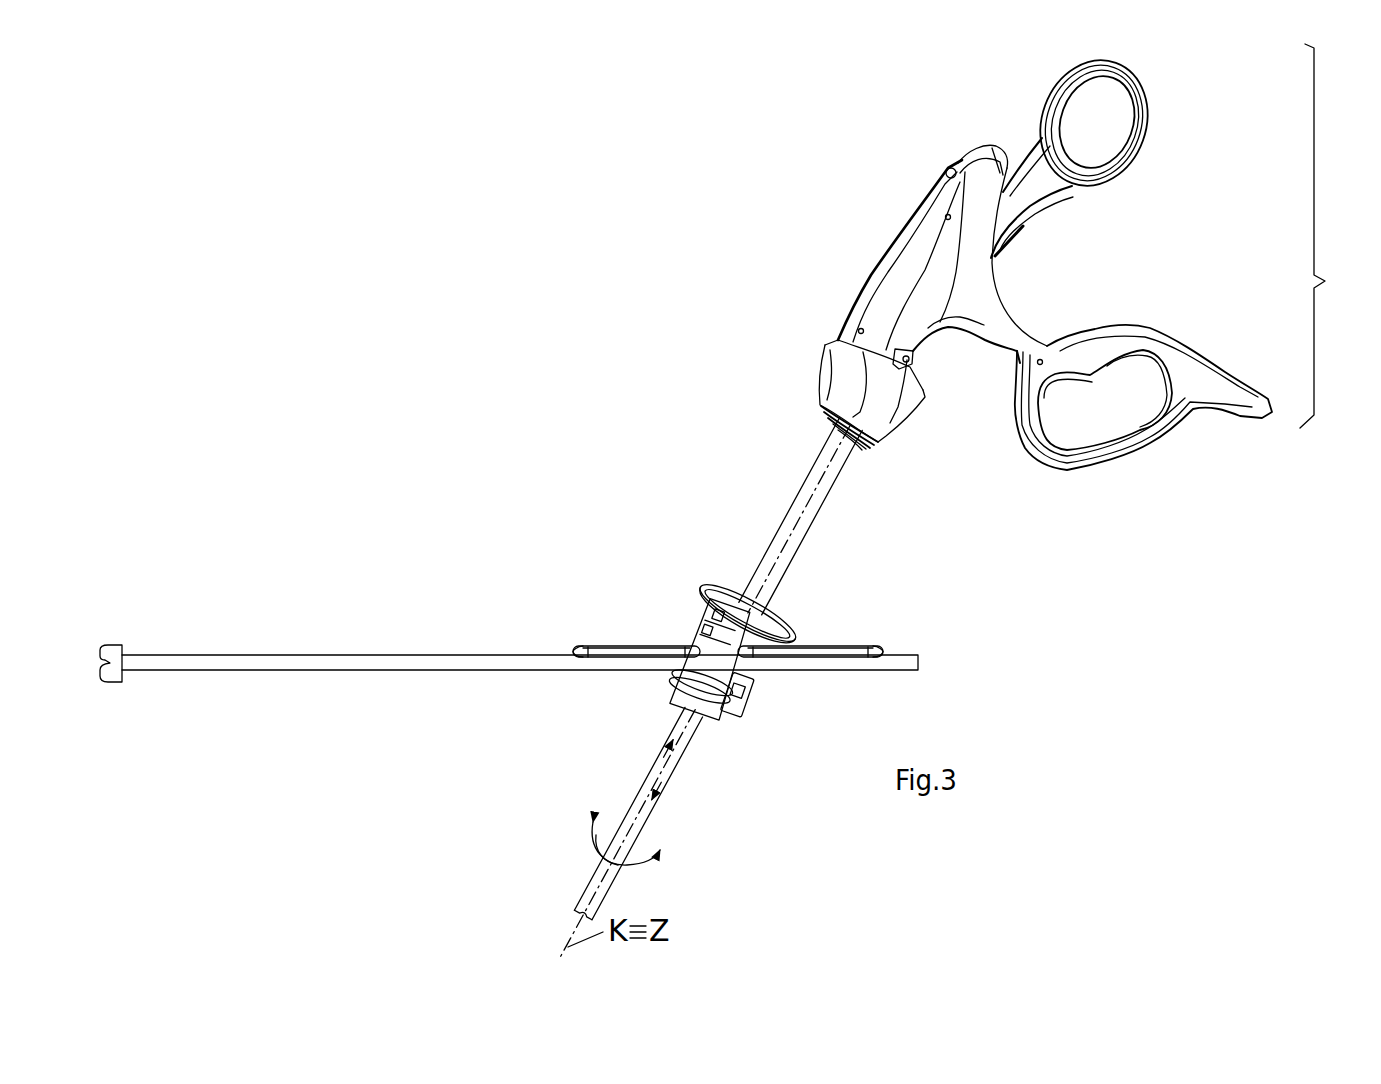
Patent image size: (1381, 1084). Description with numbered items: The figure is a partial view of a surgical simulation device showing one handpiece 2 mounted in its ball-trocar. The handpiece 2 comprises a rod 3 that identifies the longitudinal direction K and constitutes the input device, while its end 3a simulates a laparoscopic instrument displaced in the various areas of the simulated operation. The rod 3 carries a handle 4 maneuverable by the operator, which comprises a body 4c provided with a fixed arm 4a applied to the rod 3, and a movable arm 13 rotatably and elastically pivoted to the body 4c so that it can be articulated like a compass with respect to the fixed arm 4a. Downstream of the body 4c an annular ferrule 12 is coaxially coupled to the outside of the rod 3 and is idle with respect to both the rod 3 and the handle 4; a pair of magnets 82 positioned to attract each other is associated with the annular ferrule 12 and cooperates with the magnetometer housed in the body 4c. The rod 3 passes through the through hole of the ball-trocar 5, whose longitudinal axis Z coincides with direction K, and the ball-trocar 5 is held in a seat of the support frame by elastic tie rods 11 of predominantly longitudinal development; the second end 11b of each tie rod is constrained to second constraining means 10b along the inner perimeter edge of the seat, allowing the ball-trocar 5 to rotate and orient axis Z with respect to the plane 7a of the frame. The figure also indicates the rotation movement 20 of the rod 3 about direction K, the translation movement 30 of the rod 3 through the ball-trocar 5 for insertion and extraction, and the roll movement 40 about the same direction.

The handpiece 2 is at (1002, 282).
The rod 3 is at (824, 520).
The end of the rod 3a is at (598, 899).
The handle 4 is at (1325, 281).
The fixed arm 4a is at (1133, 443).
The body of the handle 4c is at (908, 262).
The ball-trocar 5 is at (705, 568).
The plane of the support frame 7a is at (223, 656).
The second constraining means 10b is at (573, 647).
The elastic tie rods 11 is at (650, 647).
The second end of the elastic tie rod 11b is at (600, 655).
The annular ferrule 12 is at (823, 390).
The movable arm 13 is at (1136, 150).
The rotation movement 20 is at (630, 862).
The translation movement 30 is at (668, 763).
The roll movement 40 is at (607, 850).
The magnets 82 is at (843, 363).